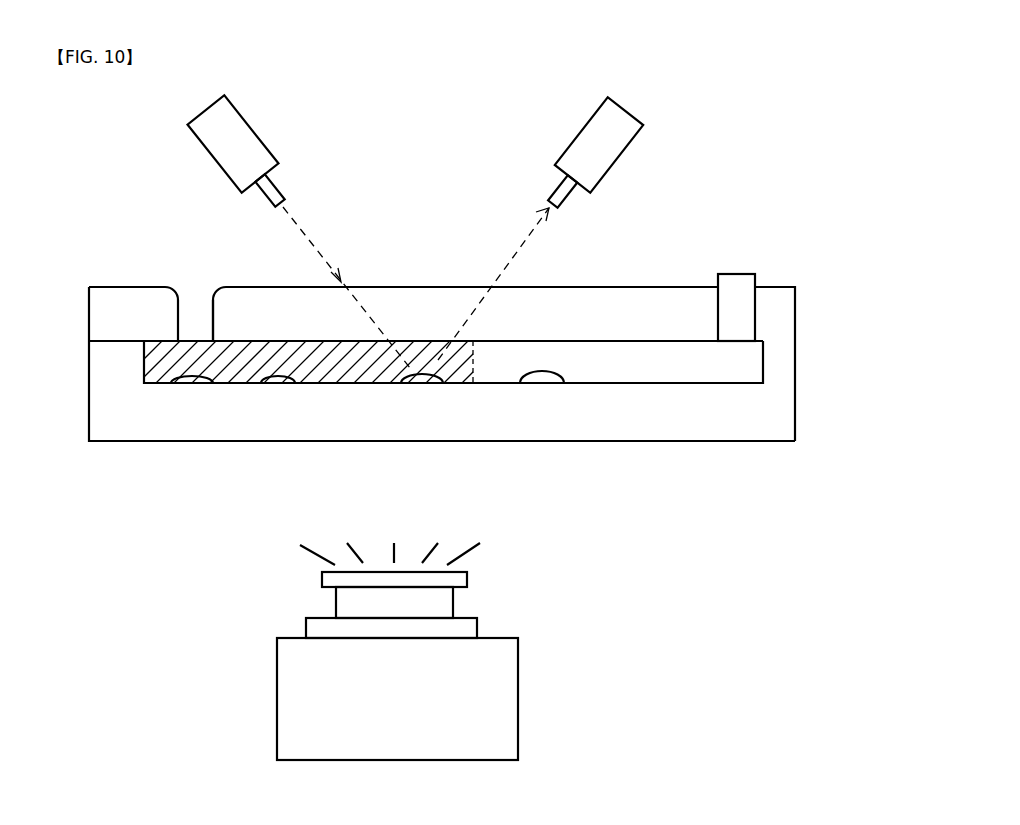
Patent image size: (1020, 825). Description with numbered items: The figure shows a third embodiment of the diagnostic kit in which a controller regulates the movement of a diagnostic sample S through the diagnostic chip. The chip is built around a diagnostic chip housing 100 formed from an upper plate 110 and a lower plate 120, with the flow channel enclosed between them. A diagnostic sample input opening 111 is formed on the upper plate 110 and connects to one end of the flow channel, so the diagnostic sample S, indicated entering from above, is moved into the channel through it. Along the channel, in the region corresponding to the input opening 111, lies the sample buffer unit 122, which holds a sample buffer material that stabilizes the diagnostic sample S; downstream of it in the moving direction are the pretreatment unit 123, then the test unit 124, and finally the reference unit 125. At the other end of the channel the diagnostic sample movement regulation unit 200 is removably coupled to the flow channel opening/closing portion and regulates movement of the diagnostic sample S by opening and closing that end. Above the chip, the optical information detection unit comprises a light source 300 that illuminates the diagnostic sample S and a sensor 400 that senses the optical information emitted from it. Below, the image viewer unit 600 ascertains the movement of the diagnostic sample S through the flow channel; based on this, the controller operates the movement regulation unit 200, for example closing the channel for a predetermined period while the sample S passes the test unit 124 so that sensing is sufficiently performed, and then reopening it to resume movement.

The diagnostic chip housing 100 is at (152, 149).
The upper plate 110 is at (780, 308).
The diagnostic sample input opening 111 is at (196, 325).
The lower plate 120 is at (668, 413).
The sample buffer unit 122 is at (192, 383).
The pretreatment unit 123 is at (278, 383).
The test unit 124 is at (428, 383).
The reference unit 125 is at (540, 383).
The diagnostic sample movement regulation unit 200 is at (728, 300).
The light source 300 is at (243, 135).
The sensor 400 is at (620, 147).
The image viewer unit 600 is at (467, 717).
The diagnostic sample S is at (162, 361).